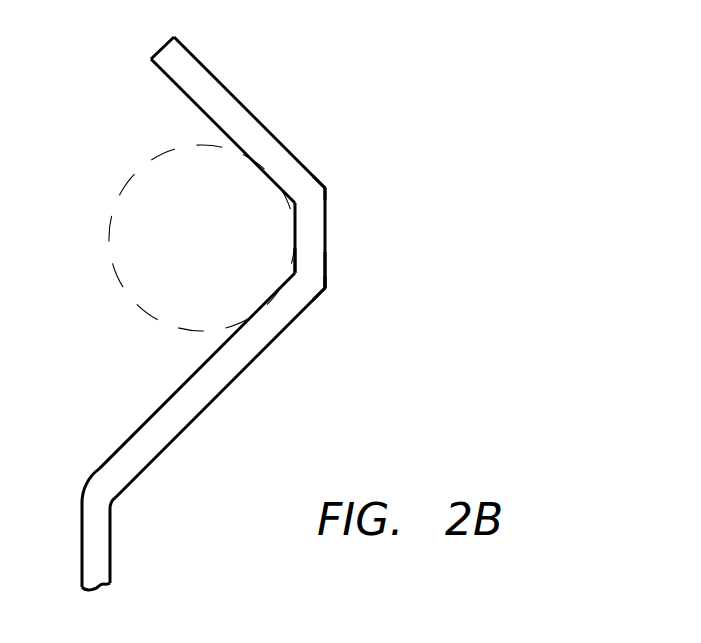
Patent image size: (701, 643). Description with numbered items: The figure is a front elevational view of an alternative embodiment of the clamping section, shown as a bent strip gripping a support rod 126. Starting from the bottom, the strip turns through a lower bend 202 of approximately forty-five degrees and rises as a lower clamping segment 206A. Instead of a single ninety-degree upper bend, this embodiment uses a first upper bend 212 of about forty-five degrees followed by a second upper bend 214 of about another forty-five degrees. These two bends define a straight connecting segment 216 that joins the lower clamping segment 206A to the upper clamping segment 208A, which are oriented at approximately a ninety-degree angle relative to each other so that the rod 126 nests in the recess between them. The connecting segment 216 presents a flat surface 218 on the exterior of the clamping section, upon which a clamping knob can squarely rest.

The support rod 126 is at (148, 163).
The lower bend 202 is at (122, 507).
The lower clamping segment 206A is at (213, 398).
The upper clamping segment 208A is at (222, 82).
The first upper bend 212 is at (327, 292).
The second upper bend 214 is at (327, 185).
The connecting segment 216 is at (326, 232).
The flat surface 218 is at (326, 268).